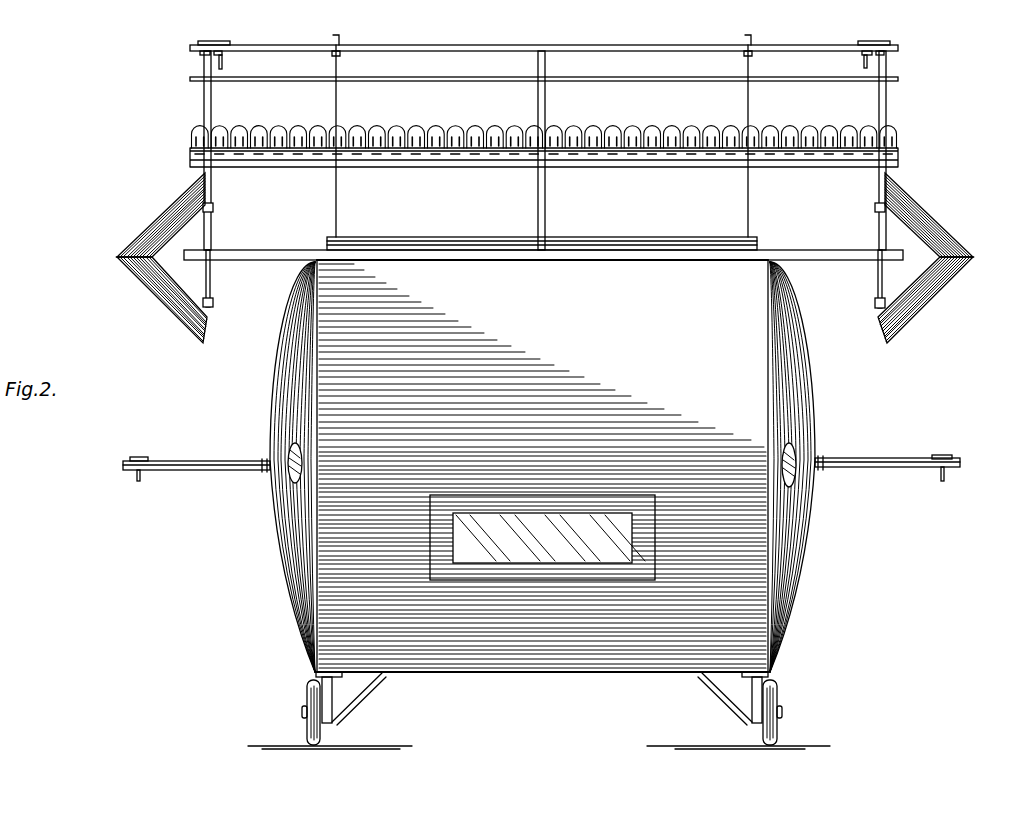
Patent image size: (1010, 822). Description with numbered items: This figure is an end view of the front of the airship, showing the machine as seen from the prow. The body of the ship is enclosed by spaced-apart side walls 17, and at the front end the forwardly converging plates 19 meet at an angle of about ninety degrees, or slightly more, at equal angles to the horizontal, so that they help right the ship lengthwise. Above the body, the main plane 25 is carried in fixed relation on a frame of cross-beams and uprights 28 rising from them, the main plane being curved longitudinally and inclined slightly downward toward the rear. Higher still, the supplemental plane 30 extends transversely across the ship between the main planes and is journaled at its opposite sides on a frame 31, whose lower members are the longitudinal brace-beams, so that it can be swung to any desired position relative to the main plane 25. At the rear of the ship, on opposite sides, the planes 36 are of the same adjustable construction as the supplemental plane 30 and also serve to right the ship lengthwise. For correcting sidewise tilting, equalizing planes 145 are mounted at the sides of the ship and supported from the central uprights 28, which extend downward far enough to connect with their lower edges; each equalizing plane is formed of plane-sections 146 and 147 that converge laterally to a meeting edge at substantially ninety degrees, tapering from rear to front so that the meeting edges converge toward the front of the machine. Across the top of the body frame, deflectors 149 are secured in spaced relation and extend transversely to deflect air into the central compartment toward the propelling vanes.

The side walls 17 is at (275, 408).
The forwardly converging plates 19 is at (748, 368).
The main plane 25 is at (413, 130).
The uprights 28 is at (212, 237).
The supplemental plane 30 is at (615, 50).
The frame 31 is at (211, 110).
The planes 36 is at (196, 452).
The equalizing planes 145 is at (913, 305).
The plane-section 146 is at (170, 304).
The plane-section 147 is at (153, 223).
The deflectors 149 is at (636, 229).